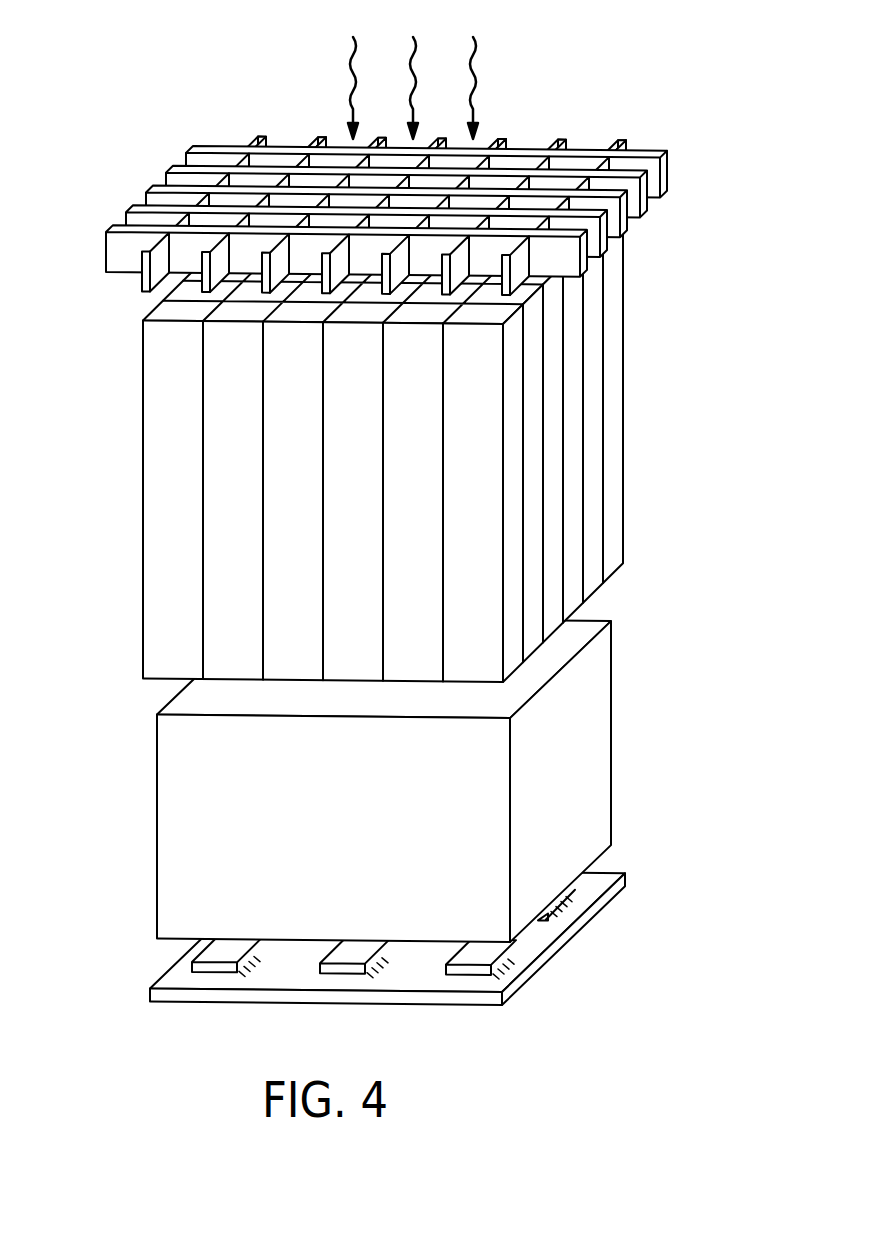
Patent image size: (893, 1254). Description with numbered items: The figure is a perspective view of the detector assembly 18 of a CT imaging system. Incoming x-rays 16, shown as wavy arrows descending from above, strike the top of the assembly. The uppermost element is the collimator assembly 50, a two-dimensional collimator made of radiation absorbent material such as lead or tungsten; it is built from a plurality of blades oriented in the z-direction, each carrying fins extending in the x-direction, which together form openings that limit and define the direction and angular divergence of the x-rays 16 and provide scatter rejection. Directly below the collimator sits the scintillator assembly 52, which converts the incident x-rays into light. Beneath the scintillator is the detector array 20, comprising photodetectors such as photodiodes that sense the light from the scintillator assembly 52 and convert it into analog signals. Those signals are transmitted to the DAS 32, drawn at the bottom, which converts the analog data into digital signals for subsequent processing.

The x-rays 16 is at (472, 76).
The detector assembly 18 is at (632, 844).
The detector array 20 is at (157, 825).
The DAS 32 is at (148, 990).
The collimator assembly 50 is at (106, 253).
The scintillator assembly 52 is at (143, 498).